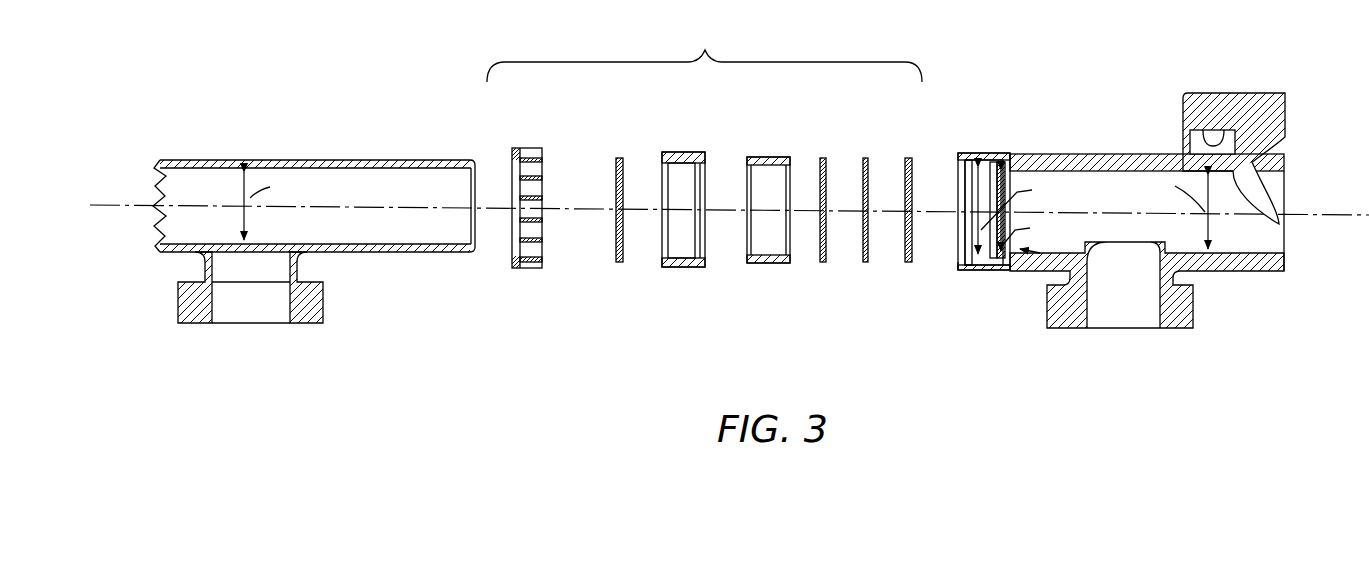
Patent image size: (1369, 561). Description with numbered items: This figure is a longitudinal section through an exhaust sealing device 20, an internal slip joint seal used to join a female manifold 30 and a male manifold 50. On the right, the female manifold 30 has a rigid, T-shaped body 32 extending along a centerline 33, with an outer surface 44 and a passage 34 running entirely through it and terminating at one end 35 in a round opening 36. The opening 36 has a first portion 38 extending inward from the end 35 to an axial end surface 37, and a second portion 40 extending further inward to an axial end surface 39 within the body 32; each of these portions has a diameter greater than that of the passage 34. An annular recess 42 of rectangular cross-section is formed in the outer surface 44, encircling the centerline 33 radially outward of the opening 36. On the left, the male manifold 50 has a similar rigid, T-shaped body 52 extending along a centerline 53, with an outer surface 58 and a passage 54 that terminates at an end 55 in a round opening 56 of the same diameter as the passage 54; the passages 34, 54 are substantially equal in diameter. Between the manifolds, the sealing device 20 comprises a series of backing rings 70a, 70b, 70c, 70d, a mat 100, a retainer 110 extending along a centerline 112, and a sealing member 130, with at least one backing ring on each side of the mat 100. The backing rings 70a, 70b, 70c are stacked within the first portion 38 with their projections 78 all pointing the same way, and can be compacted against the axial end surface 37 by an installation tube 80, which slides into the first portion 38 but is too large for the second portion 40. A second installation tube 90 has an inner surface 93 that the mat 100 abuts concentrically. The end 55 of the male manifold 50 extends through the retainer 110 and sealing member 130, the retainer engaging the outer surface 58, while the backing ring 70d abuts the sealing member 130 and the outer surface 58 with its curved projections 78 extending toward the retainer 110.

The exhaust sealing device 20 is at (705, 50).
The female manifold 30 is at (1078, 120).
The body 32 is at (1172, 210).
The centerline 33 is at (942, 210).
The passage 34 is at (1278, 182).
The end 35 is at (1003, 186).
The opening 36 is at (940, 266).
The axial end surface 37 is at (975, 270).
The first portion 38 is at (989, 270).
The axial end surface 39 is at (1008, 270).
The second portion 40 is at (1097, 250).
The annular recess 42 is at (975, 155).
The outer surface 44 is at (1006, 155).
The male manifold 50 is at (395, 118).
The body 52 is at (325, 210).
The centerline 53 is at (120, 204).
The passage 54 is at (314, 180).
The end 55 is at (403, 276).
The opening 56 is at (480, 242).
The outer surface 58 is at (452, 160).
The backing ring 70a is at (908, 158).
The backing ring 70b is at (865, 158).
The backing ring 70c is at (823, 158).
The backing ring 70d is at (619, 158).
The projections 78 is at (876, 184).
The installation tube 80 is at (768, 157).
The installation tube 90 is at (702, 214).
The inner surface 93 is at (697, 240).
The mat 100 is at (674, 228).
The retainer 110 is at (514, 179).
The centerline 112 is at (572, 213).
The sealing member 130 is at (515, 178).